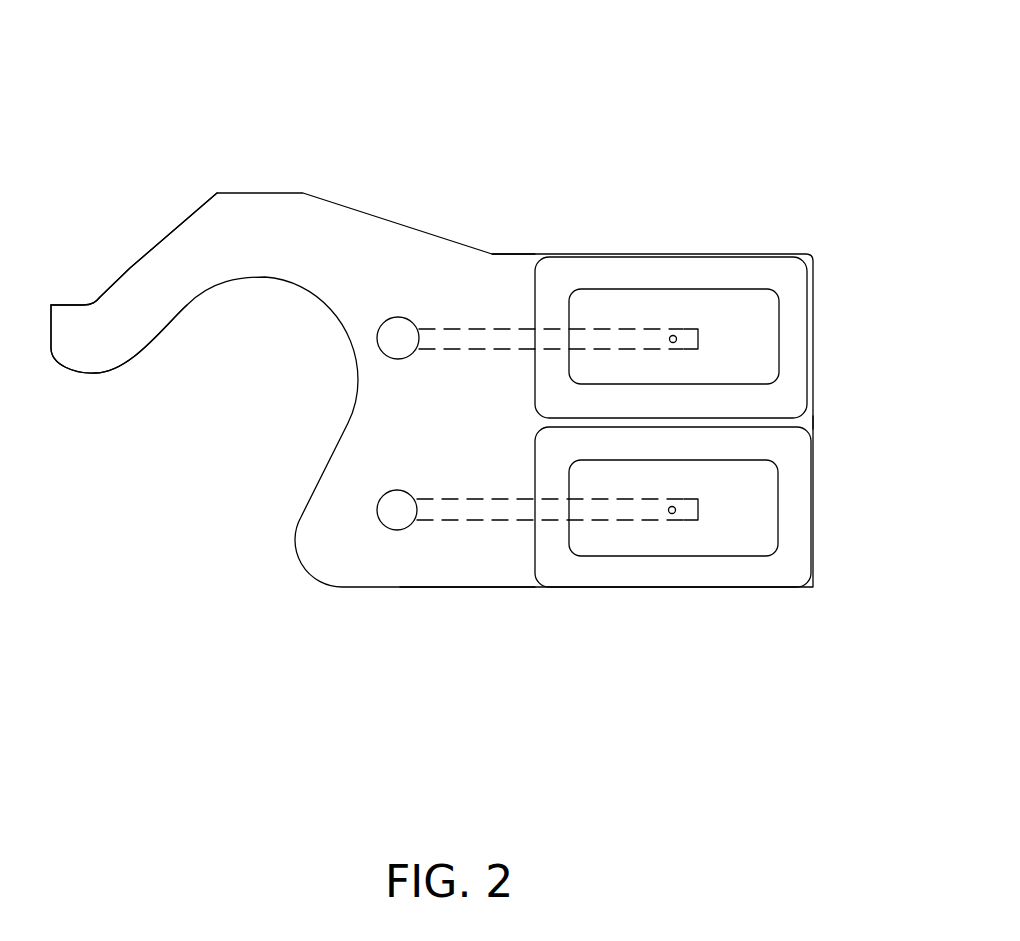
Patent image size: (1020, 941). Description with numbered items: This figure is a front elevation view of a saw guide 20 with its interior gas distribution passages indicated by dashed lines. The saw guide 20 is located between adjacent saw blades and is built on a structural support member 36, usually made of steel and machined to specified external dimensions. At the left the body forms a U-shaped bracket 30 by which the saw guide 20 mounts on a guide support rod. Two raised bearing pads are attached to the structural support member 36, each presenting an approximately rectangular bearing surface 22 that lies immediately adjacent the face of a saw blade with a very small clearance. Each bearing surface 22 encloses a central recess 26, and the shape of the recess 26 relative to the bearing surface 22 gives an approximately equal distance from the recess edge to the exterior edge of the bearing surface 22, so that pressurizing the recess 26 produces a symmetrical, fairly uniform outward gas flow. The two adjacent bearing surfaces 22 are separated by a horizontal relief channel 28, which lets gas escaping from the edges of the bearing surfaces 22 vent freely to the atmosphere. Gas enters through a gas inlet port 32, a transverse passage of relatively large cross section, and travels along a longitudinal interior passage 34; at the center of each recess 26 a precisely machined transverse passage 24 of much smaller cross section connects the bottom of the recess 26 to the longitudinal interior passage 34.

The saw guide 20 is at (312, 578).
The bearing surface 22 is at (642, 275).
The transverse passage 24 is at (678, 330).
The recess 26 is at (757, 319).
The horizontal relief channel 28 is at (775, 423).
The U-shaped bracket 30 is at (99, 322).
The gas inlet port 32 is at (398, 333).
The longitudinal interior passage 34 is at (472, 338).
The structural support member 36 is at (483, 398).